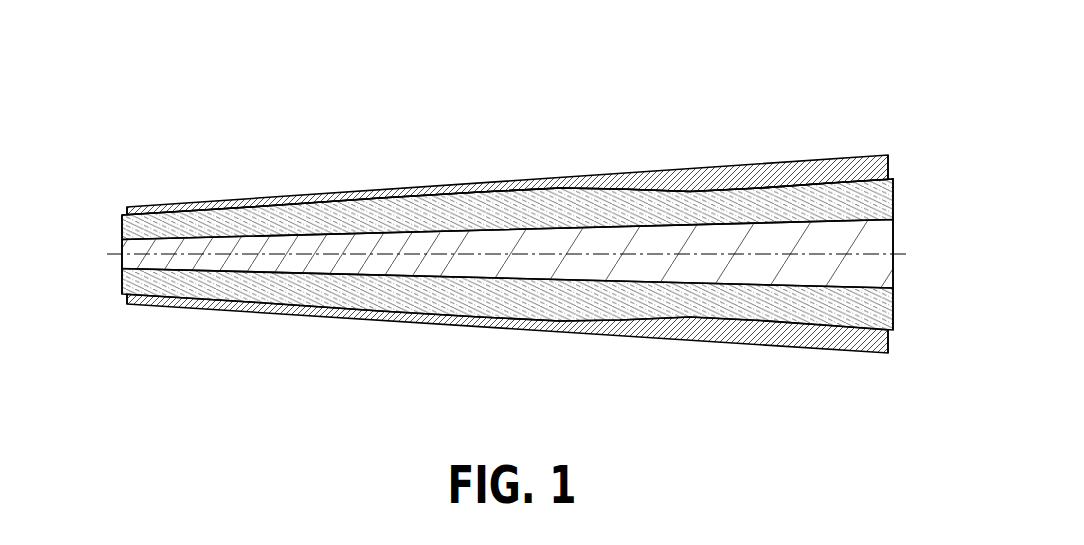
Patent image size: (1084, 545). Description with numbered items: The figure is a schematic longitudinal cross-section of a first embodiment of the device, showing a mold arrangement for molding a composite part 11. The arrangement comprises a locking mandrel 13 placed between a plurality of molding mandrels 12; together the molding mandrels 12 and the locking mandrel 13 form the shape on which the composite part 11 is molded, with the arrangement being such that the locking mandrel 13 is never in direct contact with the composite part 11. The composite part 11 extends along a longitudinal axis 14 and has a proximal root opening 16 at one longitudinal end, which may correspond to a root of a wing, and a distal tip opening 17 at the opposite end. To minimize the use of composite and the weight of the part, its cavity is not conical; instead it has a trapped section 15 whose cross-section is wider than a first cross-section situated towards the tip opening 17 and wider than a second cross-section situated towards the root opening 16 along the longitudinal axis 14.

The composite part 11 is at (688, 178).
The molding mandrels 12 is at (276, 287).
The locking mandrel 13 is at (728, 268).
The longitudinal axis 14 is at (115, 252).
The trapped section 15 is at (583, 183).
The root opening 16 is at (908, 188).
The tip opening 17 is at (118, 279).